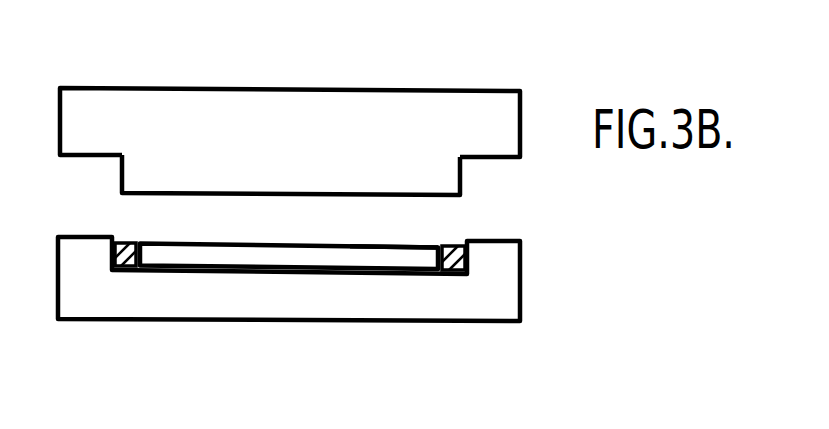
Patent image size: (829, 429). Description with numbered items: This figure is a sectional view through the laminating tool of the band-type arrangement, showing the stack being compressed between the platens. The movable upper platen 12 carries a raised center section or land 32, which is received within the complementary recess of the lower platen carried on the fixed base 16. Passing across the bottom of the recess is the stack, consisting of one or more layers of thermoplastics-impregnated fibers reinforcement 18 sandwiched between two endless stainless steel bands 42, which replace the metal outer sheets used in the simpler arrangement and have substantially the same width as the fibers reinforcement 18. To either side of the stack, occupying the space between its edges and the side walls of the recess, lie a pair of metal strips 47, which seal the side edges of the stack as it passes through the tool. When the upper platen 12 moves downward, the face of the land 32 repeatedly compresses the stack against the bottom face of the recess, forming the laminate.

The upper platen 12 is at (272, 113).
The land 32 is at (372, 185).
The fixed base 16 is at (466, 295).
The fibers reinforcement 18 is at (262, 256).
The endless stainless steel band 42 is at (362, 248).
The metal strip 47 is at (127, 268).